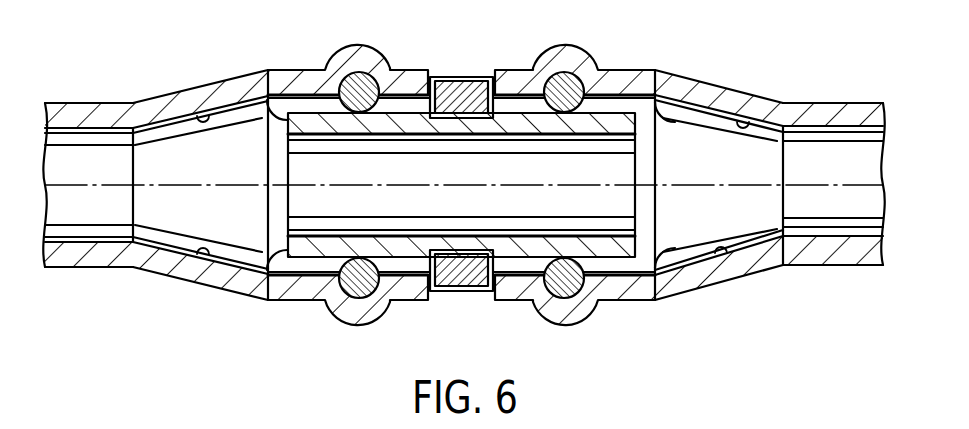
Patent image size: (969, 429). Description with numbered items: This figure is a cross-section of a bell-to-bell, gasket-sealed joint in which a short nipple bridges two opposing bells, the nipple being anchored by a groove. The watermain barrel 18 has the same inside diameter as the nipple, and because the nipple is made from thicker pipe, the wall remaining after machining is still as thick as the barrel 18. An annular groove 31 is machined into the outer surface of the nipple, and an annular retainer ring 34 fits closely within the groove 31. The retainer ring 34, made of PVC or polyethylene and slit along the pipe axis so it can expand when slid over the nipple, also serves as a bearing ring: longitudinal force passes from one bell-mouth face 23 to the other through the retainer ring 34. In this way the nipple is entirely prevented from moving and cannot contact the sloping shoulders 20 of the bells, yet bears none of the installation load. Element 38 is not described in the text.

The watermain barrel 18 is at (856, 266).
The sloping shoulder 20 is at (199, 112).
The bell-mouth face 23 is at (490, 70).
The annular groove 31 is at (480, 119).
The retainer ring 34 is at (466, 77).
The seal junction 38 is at (257, 102).